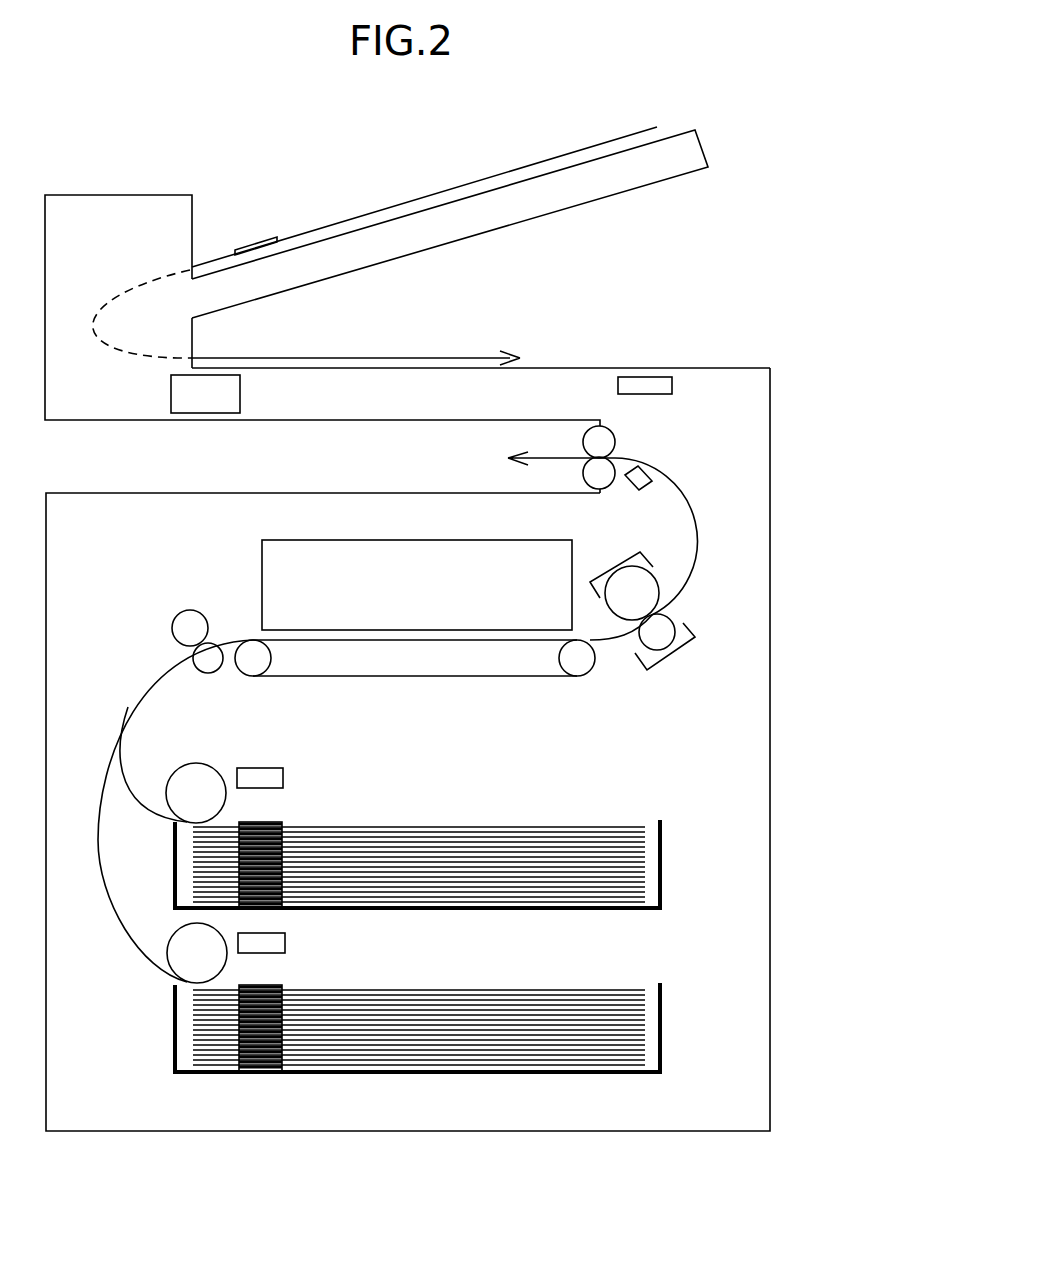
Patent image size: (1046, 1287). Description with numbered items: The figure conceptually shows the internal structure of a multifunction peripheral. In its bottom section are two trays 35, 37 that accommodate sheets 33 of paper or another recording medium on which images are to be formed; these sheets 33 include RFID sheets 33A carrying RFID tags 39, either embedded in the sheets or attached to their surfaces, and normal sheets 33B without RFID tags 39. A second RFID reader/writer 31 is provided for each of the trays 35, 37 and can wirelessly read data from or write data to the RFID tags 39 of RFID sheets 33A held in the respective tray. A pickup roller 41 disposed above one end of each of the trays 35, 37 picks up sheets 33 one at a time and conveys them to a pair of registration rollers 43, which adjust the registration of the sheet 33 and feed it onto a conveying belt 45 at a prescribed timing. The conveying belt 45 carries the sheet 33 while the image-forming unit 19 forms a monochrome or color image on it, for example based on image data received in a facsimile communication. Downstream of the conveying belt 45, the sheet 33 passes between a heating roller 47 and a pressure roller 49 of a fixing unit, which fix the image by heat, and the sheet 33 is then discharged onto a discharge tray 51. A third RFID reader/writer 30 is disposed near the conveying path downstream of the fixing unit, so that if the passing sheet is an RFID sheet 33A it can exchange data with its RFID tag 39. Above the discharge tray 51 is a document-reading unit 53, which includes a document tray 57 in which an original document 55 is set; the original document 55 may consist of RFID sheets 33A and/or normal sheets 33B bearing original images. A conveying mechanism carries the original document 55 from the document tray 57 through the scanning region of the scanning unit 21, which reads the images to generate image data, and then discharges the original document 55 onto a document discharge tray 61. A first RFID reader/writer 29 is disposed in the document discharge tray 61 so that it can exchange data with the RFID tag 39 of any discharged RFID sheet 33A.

The document-reading unit 53 is at (157, 167).
The original document 55 is at (480, 178).
The document tray 57 is at (670, 130).
The document discharge tray 61 is at (560, 368).
The first RFID reader/writer 29 is at (640, 378).
The scanning unit 21 is at (203, 405).
The RFID tag 39 is at (252, 237).
The discharge tray 51 is at (338, 493).
The third RFID reader/writer 30 is at (640, 468).
The image-forming unit 19 is at (425, 545).
The heating roller 47 is at (648, 590).
The pressure roller 49 is at (660, 622).
The conveying belt 45 is at (432, 668).
The registration rollers 43 is at (202, 658).
The pickup roller 41 is at (200, 770).
The second RFID reader/writer 31 is at (268, 776).
The sheets 33 is at (419, 922).
The RFID sheets 33A is at (450, 803).
The normal sheets 33B is at (450, 965).
The tray 35 is at (663, 858).
The tray 37 is at (663, 1028).